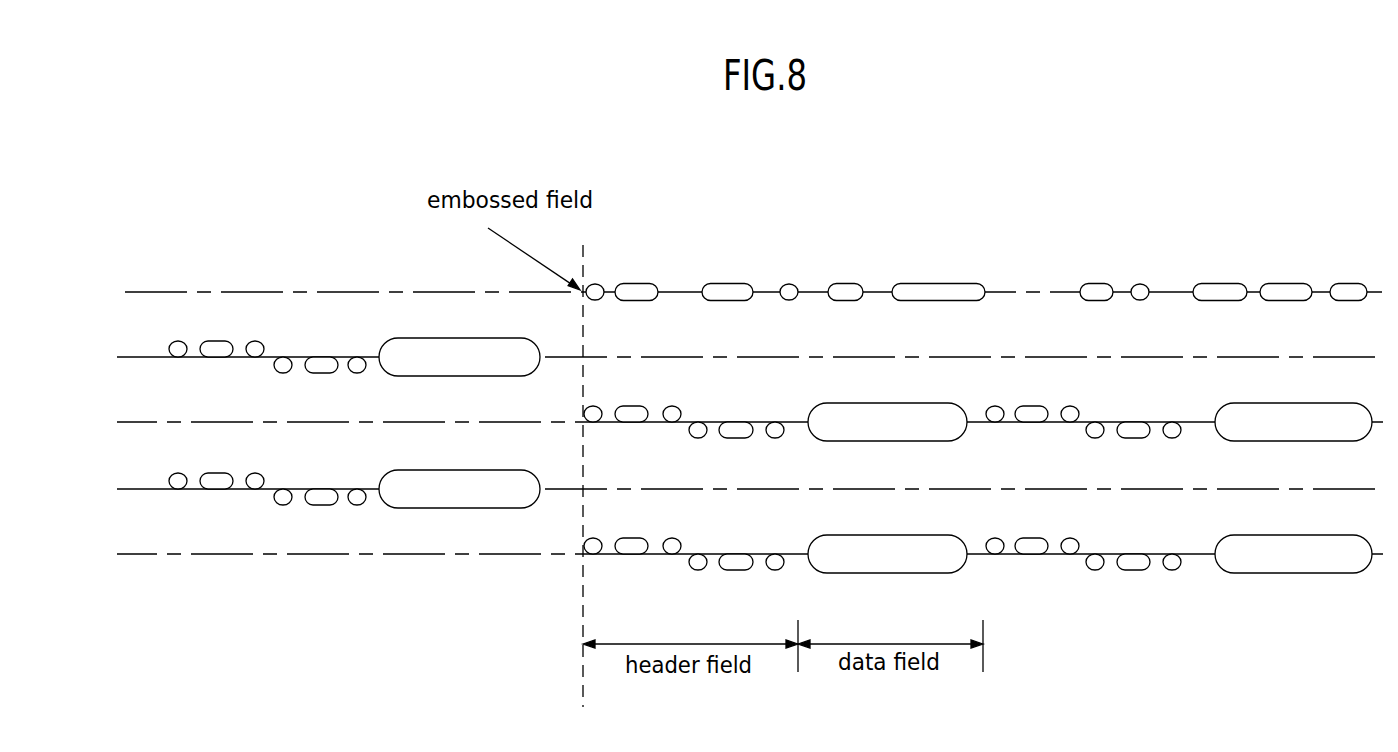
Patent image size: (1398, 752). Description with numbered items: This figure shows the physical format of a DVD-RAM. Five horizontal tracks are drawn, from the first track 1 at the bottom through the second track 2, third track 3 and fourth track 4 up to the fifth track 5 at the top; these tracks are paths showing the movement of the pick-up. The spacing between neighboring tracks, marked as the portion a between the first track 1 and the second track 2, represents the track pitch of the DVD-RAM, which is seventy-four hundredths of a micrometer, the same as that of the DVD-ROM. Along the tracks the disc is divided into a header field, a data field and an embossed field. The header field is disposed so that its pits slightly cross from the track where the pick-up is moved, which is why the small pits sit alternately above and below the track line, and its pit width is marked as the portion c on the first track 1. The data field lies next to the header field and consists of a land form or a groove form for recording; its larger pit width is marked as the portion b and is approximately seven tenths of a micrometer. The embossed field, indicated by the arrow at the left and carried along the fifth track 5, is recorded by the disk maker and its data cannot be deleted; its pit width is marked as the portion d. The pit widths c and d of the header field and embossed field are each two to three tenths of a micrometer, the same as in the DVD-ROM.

The first track 1 is at (732, 554).
The second track 2 is at (732, 489).
The third track 3 is at (732, 422).
The fourth track 4 is at (732, 357).
The fifth track 5 is at (732, 292).
The track pitch portion a is at (142, 452).
The pit width of the data field b is at (888, 612).
The pit width of the header field c is at (632, 500).
The pit width of the embossed field d is at (635, 338).